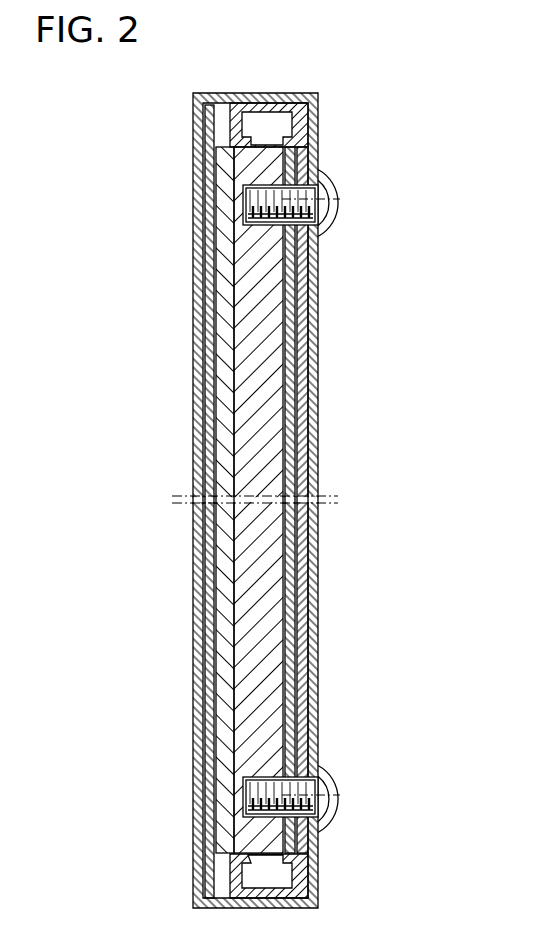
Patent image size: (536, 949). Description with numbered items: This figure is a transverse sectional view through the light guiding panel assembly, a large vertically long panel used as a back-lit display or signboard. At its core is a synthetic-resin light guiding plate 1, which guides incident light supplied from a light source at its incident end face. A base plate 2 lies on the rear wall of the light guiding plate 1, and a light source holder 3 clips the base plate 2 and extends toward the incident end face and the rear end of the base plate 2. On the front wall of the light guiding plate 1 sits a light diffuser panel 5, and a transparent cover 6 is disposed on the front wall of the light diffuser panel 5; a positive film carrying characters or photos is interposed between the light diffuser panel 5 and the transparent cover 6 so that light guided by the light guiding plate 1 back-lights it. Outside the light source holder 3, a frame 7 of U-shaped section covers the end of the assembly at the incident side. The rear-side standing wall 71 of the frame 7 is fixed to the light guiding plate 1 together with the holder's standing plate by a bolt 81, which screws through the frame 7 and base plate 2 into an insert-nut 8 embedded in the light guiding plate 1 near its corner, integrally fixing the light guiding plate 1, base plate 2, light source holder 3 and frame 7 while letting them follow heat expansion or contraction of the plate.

The light guiding plate 1 is at (233, 427).
The base plate 2 is at (306, 364).
The light source holder 3 is at (315, 148).
The light diffuser panel 5 is at (247, 331).
The transparent cover 6 is at (208, 573).
The frame 7 is at (200, 192).
The rear-side standing wall 71 is at (313, 258).
The insert-nut 8 is at (243, 186).
The bolt 81 is at (333, 202).